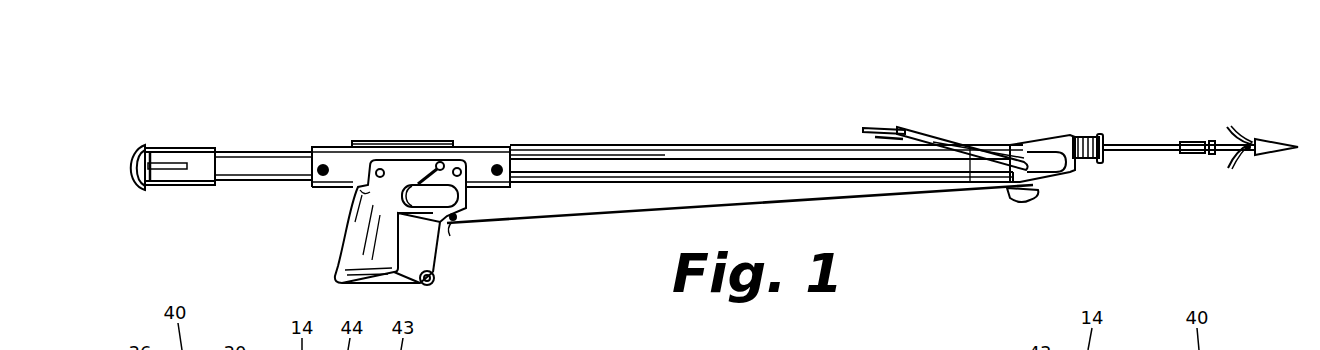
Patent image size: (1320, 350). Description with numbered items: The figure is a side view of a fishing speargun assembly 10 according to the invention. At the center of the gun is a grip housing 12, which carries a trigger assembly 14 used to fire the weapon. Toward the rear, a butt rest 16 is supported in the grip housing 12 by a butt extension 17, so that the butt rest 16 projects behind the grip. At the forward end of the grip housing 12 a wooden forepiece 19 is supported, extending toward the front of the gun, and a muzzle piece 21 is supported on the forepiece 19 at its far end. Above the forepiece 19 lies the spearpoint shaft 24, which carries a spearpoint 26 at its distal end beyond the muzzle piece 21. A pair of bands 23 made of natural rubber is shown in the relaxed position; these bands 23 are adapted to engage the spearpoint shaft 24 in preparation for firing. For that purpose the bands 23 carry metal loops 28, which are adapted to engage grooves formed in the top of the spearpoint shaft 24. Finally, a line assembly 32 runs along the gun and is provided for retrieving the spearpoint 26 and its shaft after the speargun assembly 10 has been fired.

The speargun assembly 10 is at (580, 124).
The grip housing 12 is at (326, 138).
The trigger assembly 14 is at (410, 140).
The butt rest 16 is at (193, 152).
The butt extension 17 is at (255, 182).
The wooden forepiece 19 is at (652, 178).
The muzzle piece 21 is at (988, 173).
The bands 23 is at (963, 140).
The spearpoint shaft 24 is at (692, 143).
The spearpoint 26 is at (1275, 138).
The metal loops 28 is at (873, 130).
The line assembly 32 is at (541, 228).